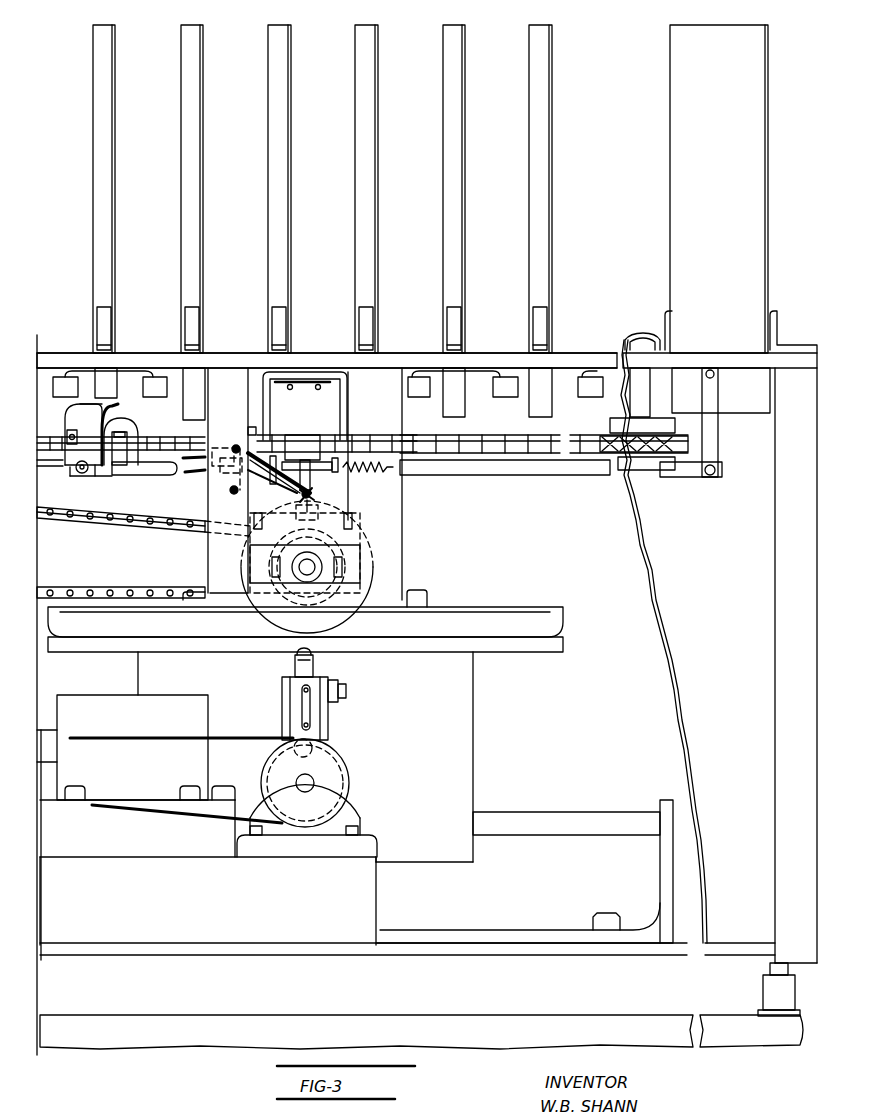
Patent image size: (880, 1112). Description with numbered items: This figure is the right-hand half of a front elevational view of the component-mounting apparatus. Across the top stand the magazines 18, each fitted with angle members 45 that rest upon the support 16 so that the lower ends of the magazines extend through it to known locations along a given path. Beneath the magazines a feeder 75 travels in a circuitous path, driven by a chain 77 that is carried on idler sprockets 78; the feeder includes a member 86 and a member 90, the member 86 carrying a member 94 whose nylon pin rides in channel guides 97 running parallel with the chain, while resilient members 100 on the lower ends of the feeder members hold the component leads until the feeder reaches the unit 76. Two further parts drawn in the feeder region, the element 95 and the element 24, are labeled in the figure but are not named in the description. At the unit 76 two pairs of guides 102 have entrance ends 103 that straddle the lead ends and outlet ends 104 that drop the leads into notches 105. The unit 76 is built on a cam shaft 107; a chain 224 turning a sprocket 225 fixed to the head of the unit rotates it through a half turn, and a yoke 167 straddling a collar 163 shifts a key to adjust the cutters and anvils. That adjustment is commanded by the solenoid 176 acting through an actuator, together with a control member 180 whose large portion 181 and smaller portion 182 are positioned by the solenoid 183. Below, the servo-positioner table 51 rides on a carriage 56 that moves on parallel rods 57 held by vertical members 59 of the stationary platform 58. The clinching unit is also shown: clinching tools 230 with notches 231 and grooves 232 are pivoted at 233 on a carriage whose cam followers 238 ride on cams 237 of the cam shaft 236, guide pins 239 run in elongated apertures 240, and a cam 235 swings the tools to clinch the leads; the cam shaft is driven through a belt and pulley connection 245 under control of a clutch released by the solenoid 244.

The magazine 18 is at (181, 70).
The angle member 45 is at (185, 316).
The feeder 75 is at (132, 366).
The support 16 is at (486, 360).
The solenoid 176 is at (330, 368).
The member 90 is at (76, 408).
The body block 95 is at (83, 434).
The member 86 is at (118, 420).
The member 94 is at (132, 436).
The control member 180 is at (243, 452).
The large portion 181 is at (292, 436).
The chain 77 is at (474, 444).
The idler sprocket 78 is at (594, 436).
The roller 24 is at (80, 474).
The resilient member 100 is at (106, 472).
The channel guide 97 is at (136, 474).
The entrance end 103 is at (176, 466).
The solenoid 183 is at (210, 481).
The guide 102 is at (250, 490).
The smaller portion 182 is at (331, 474).
The outlet end 104 is at (324, 497).
The notch 105 is at (296, 508).
The unit 76 is at (358, 523).
The yoke 167 is at (317, 566).
The chain 224 is at (188, 527).
The sprocket 225 is at (252, 563).
The cam shaft 107 is at (296, 572).
The collar 163 is at (307, 568).
The table 51 is at (504, 608).
The notch 231 is at (297, 651).
The clinching tool 230 is at (314, 665).
The solenoid 244 is at (190, 700).
The groove 232 is at (283, 686).
The elongated aperture 240 is at (338, 691).
The pivot 233 is at (346, 692).
The cam follower 238 is at (285, 735).
The guide pin 239 is at (312, 714).
The carriage 56 is at (473, 713).
The cam 237 is at (345, 783).
The cam shaft 236 is at (305, 792).
The cam 235 is at (366, 808).
The parallel rod 57 is at (524, 818).
The vertical member 59 is at (660, 858).
The belt and pulley connection 245 is at (176, 814).
The platform 58 is at (472, 932).